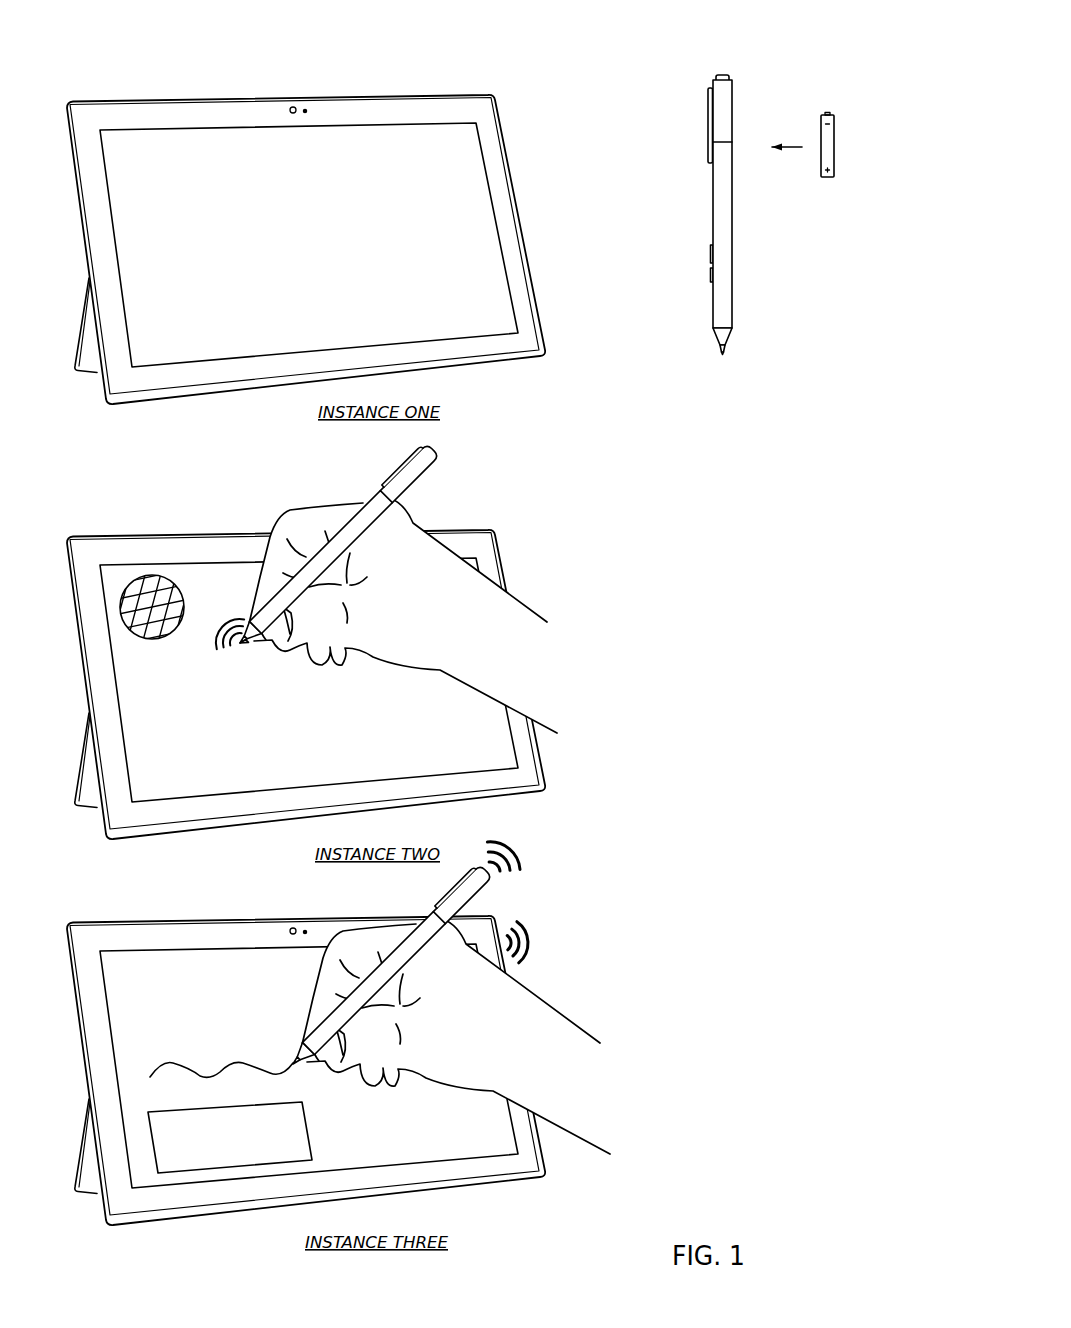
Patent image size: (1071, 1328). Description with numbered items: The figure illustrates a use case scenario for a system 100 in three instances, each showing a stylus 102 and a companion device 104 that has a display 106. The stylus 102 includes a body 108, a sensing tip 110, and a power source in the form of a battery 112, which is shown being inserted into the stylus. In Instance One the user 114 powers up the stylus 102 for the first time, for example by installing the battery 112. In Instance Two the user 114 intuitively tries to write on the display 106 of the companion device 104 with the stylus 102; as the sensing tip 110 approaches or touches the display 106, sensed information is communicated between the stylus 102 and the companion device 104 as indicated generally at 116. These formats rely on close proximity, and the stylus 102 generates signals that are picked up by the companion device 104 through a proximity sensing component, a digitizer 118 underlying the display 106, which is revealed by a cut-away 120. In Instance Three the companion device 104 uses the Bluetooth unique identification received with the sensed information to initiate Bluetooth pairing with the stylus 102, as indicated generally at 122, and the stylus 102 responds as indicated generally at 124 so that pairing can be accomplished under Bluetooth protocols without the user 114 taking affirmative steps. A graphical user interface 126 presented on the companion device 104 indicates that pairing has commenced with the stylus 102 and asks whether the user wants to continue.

The system 100 is at (470, 640).
The stylus 102 is at (736, 203).
The companion device 104 is at (131, 918).
The display 106 is at (345, 126).
The body 108 is at (734, 268).
The sensing tip 110 is at (726, 350).
The battery 112 is at (826, 111).
The user 114 is at (432, 826).
The sensed information communication 116 is at (210, 644).
The digitizer 118 is at (170, 579).
The cut-away 120 is at (186, 603).
The Bluetooth pairing initiation 122 is at (534, 930).
The stylus response 124 is at (521, 848).
The graphical user interface 126 is at (312, 1133).